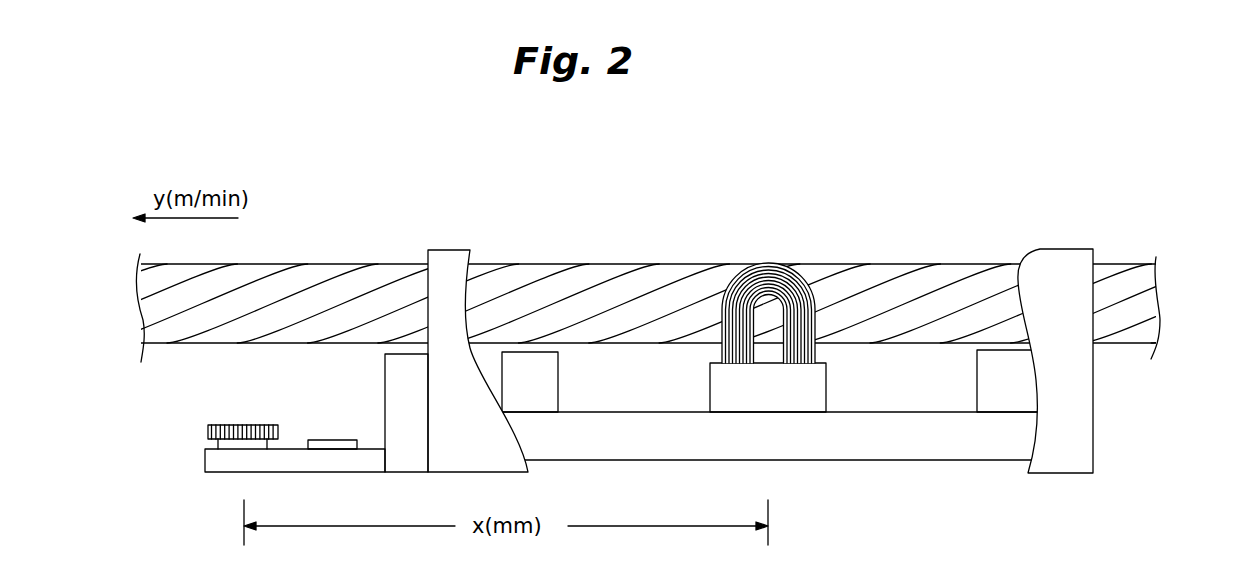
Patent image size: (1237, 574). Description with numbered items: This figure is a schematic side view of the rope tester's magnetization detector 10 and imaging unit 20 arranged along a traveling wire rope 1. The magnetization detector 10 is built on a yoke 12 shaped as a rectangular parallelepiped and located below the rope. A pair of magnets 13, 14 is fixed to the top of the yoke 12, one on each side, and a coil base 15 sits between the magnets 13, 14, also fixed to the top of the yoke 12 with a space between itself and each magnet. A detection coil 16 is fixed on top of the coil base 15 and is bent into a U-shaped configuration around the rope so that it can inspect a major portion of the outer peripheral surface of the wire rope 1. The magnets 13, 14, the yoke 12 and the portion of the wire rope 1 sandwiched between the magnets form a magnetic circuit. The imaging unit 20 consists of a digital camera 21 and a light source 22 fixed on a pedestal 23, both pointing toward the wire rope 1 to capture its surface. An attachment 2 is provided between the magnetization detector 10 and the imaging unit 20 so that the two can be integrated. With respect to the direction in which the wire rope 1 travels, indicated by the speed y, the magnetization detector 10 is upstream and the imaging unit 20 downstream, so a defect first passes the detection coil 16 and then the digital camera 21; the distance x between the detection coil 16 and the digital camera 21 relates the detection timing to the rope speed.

The wire rope 1 is at (377, 280).
The attachment 2 is at (385, 372).
The magnetization detector 10 is at (1088, 445).
The yoke 12 is at (902, 462).
The magnet 13 is at (558, 376).
The magnet 14 is at (977, 373).
The coil base 15 is at (827, 393).
The detection coil 16 is at (793, 266).
The imaging unit 20 is at (216, 457).
The digital camera 21 is at (233, 424).
The light source 22 is at (318, 407).
The pedestal 23 is at (222, 462).